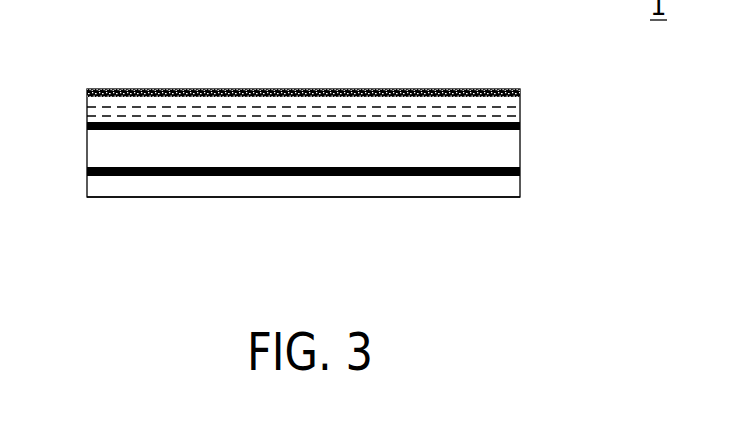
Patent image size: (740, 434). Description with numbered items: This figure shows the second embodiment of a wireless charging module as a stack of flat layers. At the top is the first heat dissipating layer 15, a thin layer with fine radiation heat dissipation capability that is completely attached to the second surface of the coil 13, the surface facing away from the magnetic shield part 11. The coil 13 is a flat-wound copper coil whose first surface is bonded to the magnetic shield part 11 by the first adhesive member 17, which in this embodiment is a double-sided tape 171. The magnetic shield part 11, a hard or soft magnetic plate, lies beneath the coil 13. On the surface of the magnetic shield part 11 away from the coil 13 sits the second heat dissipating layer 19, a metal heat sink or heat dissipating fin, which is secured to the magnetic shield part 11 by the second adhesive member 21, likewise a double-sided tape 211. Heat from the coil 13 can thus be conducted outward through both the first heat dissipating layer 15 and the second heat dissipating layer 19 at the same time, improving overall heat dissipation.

The magnetic shield part 11 is at (512, 153).
The coil 13 is at (512, 111).
The first heat dissipating layer 15 is at (87, 93).
The first adhesive member 17 is at (87, 126).
The double-sided tape 171 is at (530, 127).
The second heat dissipating layer 19 is at (512, 191).
The second adhesive member 21 is at (87, 172).
The double-sided tape 211 is at (530, 172).